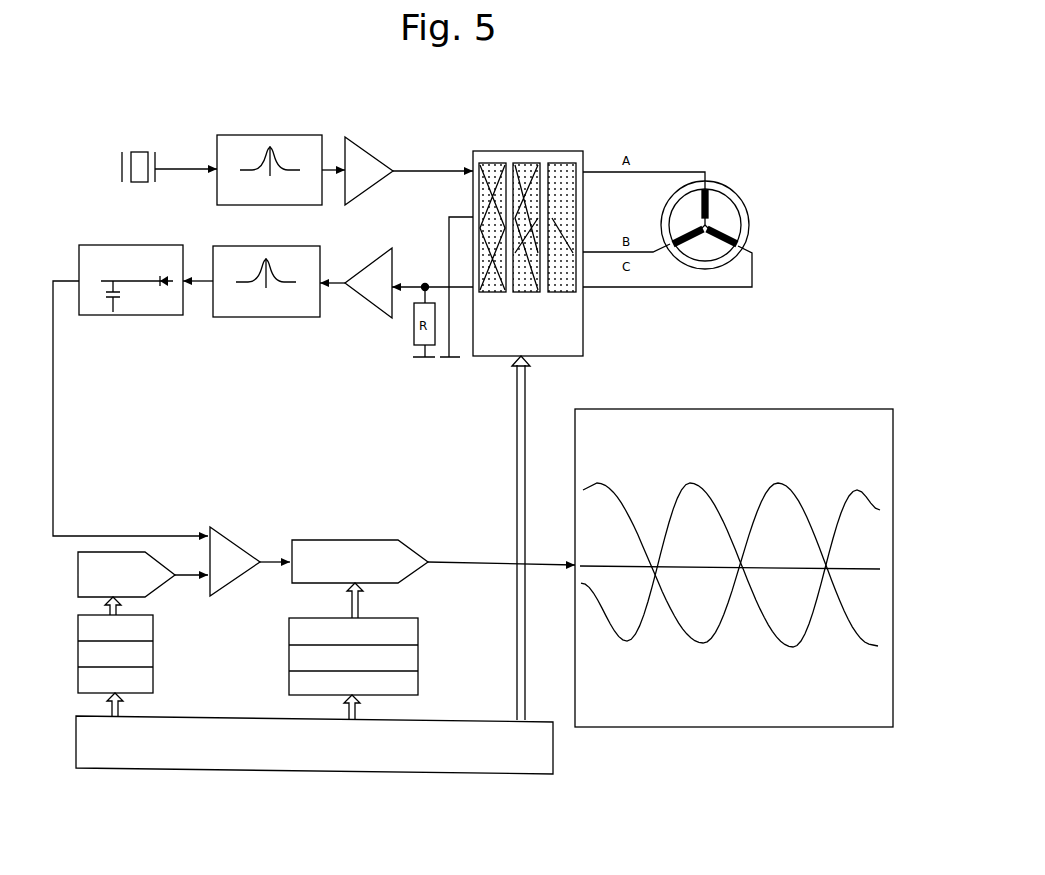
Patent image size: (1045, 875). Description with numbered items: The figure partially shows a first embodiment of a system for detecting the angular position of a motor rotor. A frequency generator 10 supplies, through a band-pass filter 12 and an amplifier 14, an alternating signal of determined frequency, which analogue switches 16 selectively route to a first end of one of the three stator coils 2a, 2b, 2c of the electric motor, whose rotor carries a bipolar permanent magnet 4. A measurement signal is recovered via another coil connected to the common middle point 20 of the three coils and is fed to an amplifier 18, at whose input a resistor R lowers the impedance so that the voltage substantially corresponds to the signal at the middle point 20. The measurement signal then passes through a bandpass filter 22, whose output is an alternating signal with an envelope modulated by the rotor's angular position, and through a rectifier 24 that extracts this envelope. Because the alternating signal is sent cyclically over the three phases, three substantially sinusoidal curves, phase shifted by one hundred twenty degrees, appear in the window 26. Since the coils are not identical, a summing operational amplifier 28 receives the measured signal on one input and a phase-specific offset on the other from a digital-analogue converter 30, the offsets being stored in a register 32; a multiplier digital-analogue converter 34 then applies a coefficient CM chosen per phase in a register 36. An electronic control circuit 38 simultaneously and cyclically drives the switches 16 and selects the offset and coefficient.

The frequency generator 10 is at (157, 134).
The band-pass filter 12 is at (298, 135).
The amplifier 14 is at (366, 160).
The analogue switches 16 is at (561, 138).
The stator coil 2a is at (708, 193).
The stator coil 2b is at (740, 244).
The stator coil 2c is at (680, 252).
The bipolar permanent magnet 4 is at (748, 215).
The middle point 20 is at (710, 237).
The amplifier 18 is at (371, 298).
The bandpass filter 22 is at (260, 319).
The rectifier 24 is at (138, 318).
The window 26 is at (745, 745).
The summing operational amplifier 28 is at (244, 548).
The digital-analogue converter 30 is at (78, 566).
The register 32 is at (78, 645).
The multiplier digital-analogue converter 34 is at (338, 540).
The register 36 is at (290, 654).
The electronic control circuit 38 is at (306, 760).